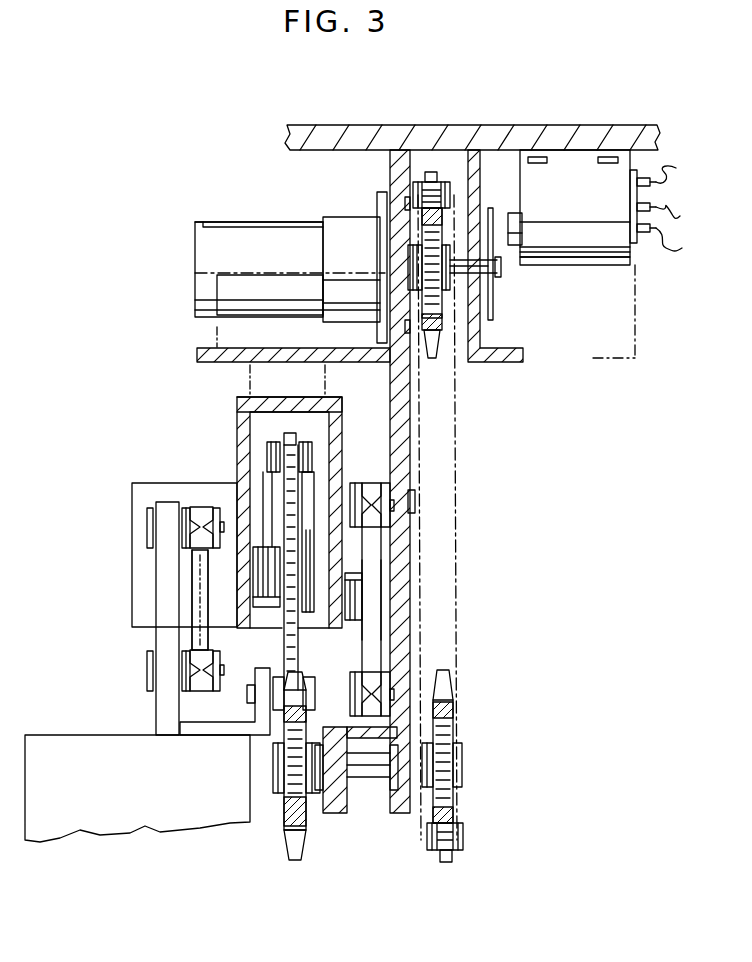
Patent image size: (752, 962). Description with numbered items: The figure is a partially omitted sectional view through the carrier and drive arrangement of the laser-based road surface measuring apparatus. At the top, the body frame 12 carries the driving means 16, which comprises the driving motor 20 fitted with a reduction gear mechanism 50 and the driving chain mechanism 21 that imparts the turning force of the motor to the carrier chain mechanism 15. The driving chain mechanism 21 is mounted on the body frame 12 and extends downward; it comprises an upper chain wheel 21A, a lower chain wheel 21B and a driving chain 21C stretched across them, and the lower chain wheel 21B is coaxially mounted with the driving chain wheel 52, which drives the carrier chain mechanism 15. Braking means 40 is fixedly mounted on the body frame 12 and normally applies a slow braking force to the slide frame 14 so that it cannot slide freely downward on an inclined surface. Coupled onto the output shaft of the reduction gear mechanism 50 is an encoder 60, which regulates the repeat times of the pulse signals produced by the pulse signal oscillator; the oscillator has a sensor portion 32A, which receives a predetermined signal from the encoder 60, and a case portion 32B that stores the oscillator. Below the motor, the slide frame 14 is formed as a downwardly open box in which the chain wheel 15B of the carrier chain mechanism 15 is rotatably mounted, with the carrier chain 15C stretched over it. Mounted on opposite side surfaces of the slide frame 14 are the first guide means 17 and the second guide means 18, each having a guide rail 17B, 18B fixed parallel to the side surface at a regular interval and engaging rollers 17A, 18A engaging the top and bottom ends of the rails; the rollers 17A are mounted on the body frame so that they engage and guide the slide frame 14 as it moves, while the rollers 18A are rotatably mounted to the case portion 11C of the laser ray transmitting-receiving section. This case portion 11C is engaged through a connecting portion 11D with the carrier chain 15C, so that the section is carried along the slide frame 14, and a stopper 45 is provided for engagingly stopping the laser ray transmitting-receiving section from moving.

The body frame 12 is at (345, 125).
The chain wheel 21A is at (430, 172).
The sensor portion of the pulse signal oscillator 32A is at (515, 213).
The driving means 16 is at (233, 212).
The driving motor 20 is at (208, 222).
The braking means 40 is at (217, 282).
The reduction gear mechanism 50 is at (355, 217).
The encoder 60 is at (497, 297).
The case portion of the pulse signal oscillator 32B is at (592, 265).
The slide frame 14 is at (340, 434).
The carrier chain 15C is at (337, 406).
The chain wheel 15B is at (285, 437).
The carrier chain mechanism 15 is at (267, 480).
The stopper 45 is at (132, 588).
The second guide means 18 is at (190, 580).
The guide rail 18B is at (193, 607).
The engaging rollers 18A is at (205, 507).
The connecting portion 11D is at (260, 705).
The case portion 11C is at (68, 735).
The driving chain wheel 52 is at (287, 818).
The first guide means 17 is at (383, 543).
The guide rail 17B is at (382, 570).
The engaging rollers 17A is at (380, 483).
The driving chain mechanism 21 is at (472, 825).
The driving chain 21C is at (458, 594).
The chain wheel 21B is at (445, 860).